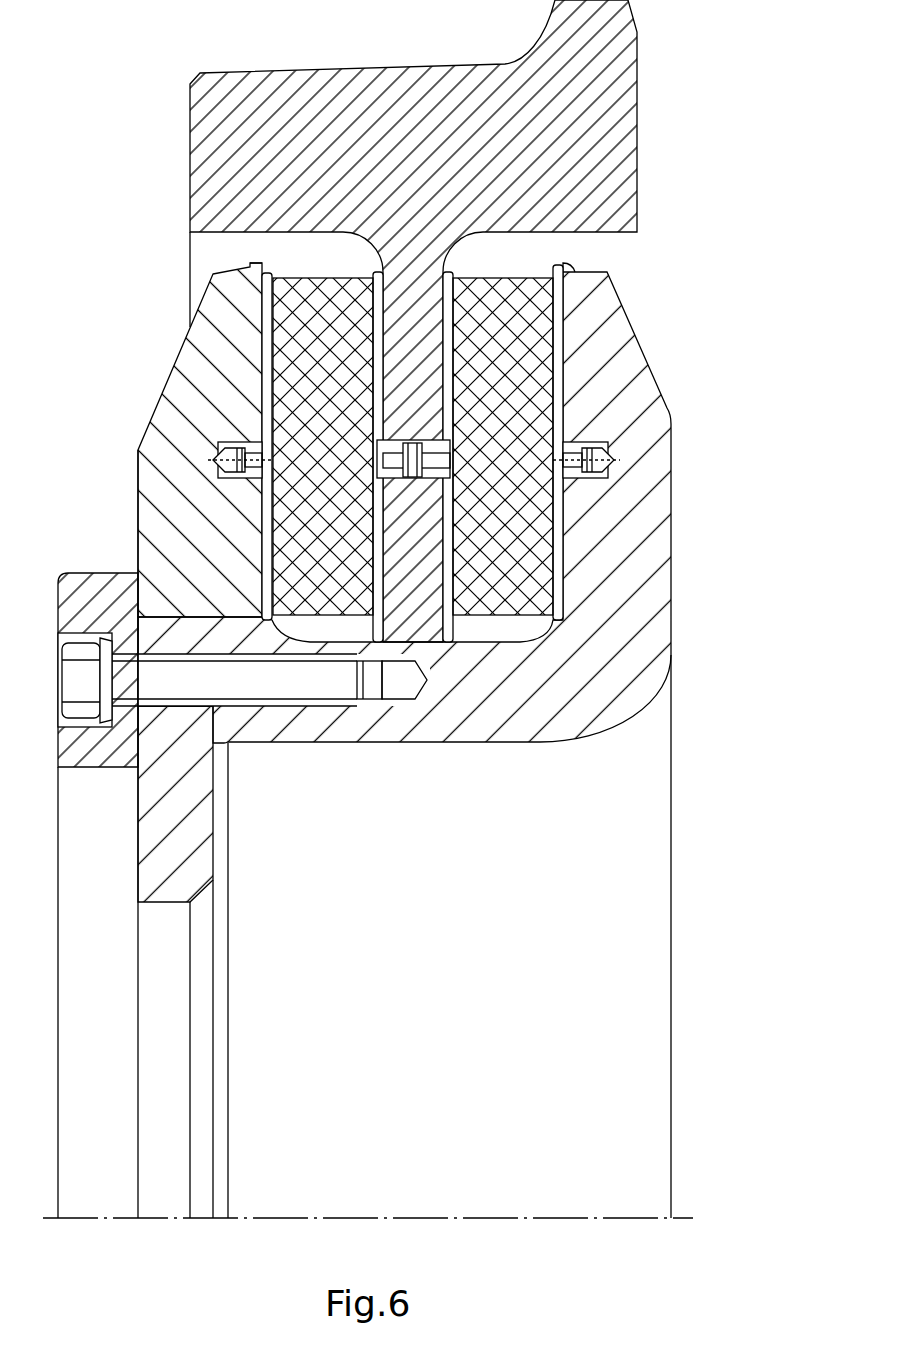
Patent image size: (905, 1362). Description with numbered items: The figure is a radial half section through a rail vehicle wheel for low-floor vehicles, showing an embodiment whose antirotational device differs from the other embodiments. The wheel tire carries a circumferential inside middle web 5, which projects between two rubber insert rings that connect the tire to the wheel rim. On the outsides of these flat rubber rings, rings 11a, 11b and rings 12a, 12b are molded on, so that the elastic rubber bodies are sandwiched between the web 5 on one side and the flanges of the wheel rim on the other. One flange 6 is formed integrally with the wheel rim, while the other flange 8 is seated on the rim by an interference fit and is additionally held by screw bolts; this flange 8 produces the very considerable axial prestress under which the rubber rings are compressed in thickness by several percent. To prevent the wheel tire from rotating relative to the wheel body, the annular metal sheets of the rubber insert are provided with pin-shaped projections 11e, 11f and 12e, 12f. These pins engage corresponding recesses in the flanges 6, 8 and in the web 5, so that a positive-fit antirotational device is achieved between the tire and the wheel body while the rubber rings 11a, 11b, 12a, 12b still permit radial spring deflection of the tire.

The middle web 5 is at (417, 312).
The flange 6 is at (632, 497).
The flange 8 is at (185, 473).
The ring 11a is at (457, 323).
The ring 11b is at (563, 333).
The pin-shaped projection 11e is at (607, 450).
The pin-shaped projection 11f is at (432, 452).
The ring 12a is at (330, 360).
The ring 12b is at (372, 322).
The pin-shaped projection 12e is at (220, 447).
The pin-shaped projection 12f is at (385, 450).